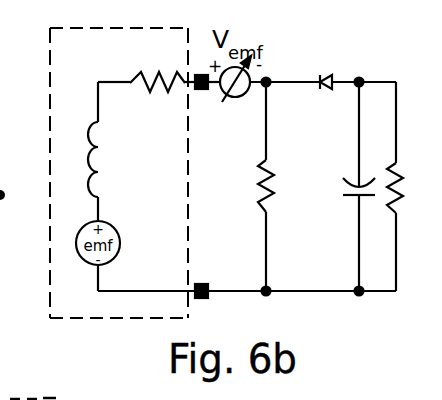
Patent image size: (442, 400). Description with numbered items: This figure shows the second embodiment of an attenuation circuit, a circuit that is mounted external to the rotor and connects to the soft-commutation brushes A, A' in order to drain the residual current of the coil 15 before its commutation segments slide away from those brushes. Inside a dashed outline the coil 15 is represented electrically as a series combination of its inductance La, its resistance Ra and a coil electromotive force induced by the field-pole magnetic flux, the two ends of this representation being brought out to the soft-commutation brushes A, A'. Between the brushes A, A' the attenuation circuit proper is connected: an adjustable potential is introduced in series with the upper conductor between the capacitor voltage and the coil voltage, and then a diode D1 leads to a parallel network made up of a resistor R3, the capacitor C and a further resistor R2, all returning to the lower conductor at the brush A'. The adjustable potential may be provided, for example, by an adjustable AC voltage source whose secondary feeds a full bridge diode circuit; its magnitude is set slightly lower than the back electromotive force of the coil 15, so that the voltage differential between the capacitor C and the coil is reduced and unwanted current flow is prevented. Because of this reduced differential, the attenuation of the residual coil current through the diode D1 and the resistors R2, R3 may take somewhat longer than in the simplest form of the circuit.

The coil 15 is at (50, 70).
The coil resistance Ra is at (157, 68).
The coil inductance La is at (108, 150).
The soft-commutation brush A is at (213, 107).
The soft-commutation brush A' is at (215, 265).
The diode D1 is at (327, 90).
The resistor R2 is at (389, 176).
The resistor R3 is at (272, 190).
The capacitor C is at (355, 199).